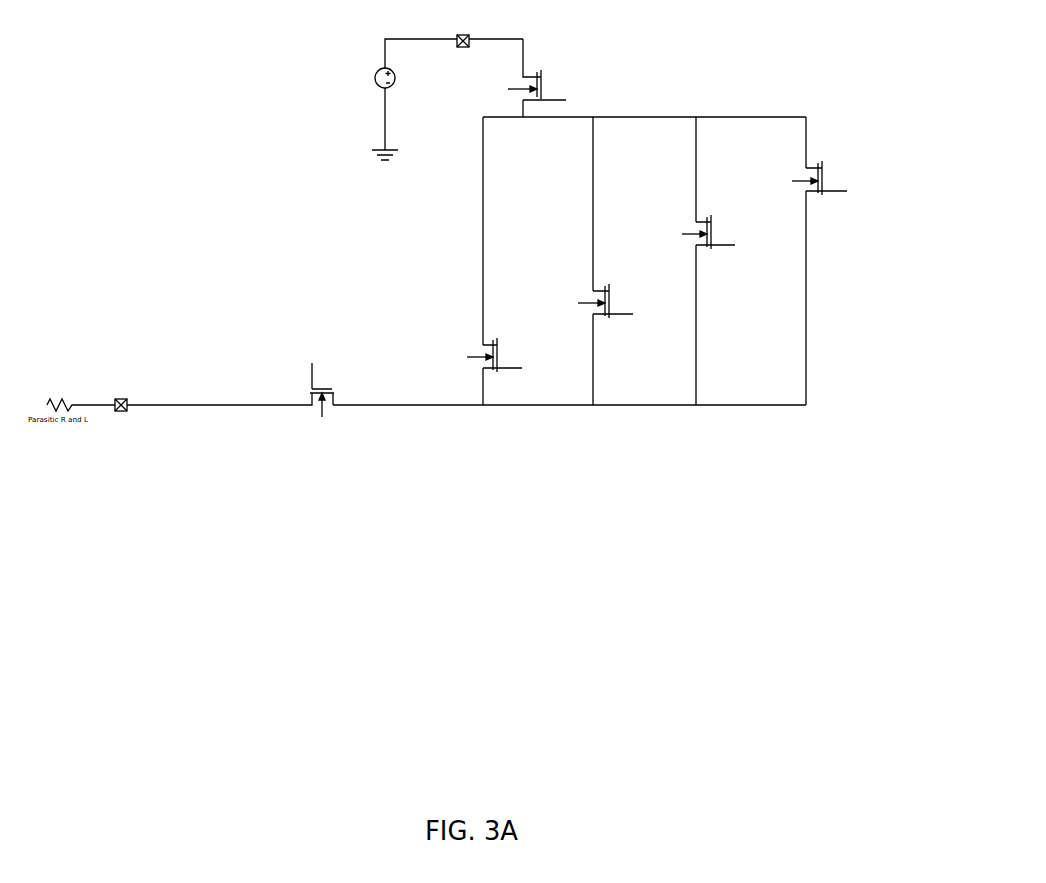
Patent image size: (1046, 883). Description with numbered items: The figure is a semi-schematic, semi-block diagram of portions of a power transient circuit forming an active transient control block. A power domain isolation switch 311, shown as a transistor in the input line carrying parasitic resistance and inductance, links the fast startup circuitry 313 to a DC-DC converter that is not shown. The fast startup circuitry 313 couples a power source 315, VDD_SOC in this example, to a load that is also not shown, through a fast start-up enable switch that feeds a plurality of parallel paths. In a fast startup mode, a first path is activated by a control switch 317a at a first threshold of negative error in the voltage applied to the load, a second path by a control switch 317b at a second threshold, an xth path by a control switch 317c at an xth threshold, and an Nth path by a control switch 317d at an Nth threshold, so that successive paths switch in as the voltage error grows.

The power domain isolation transistor 311 is at (328, 397).
The fast startup circuitry 313 is at (803, 62).
The power source 315 is at (377, 72).
The control switch 317a is at (493, 345).
The control switch 317b is at (605, 291).
The control switch 317c is at (707, 222).
The control switch 317d is at (818, 167).